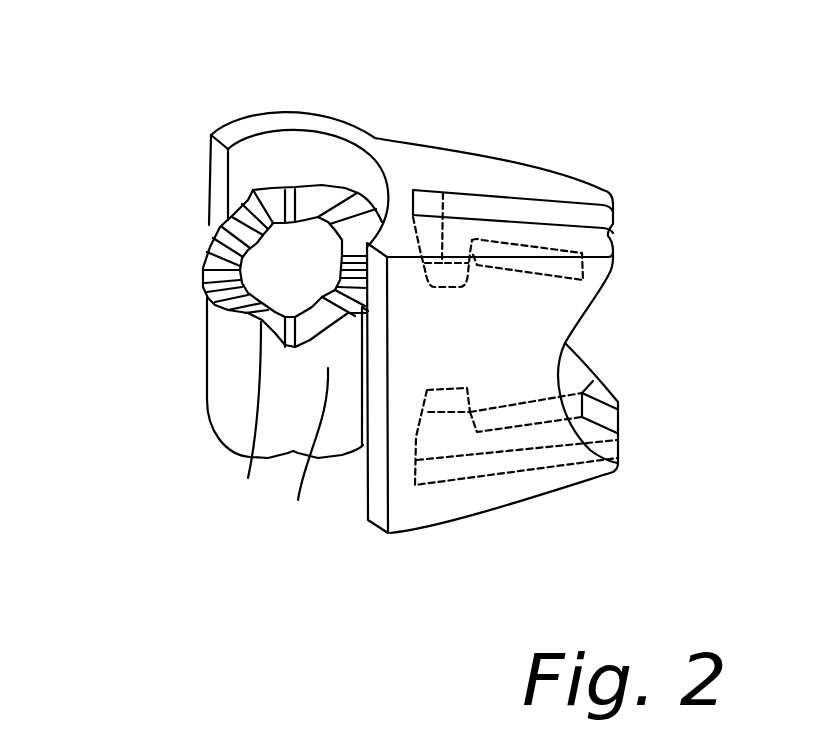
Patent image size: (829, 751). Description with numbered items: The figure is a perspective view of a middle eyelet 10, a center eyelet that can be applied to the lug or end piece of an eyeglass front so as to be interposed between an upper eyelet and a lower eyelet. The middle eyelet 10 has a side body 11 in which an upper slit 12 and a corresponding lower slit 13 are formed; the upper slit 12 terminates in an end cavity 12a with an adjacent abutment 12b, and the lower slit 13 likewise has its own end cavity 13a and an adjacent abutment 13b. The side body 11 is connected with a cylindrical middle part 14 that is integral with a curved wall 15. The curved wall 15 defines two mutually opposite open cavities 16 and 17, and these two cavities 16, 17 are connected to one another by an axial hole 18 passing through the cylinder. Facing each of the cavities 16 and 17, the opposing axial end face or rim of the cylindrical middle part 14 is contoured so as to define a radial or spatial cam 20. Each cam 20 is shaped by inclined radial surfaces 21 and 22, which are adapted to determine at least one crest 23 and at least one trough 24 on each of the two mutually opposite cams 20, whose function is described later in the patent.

The middle eyelet 10 is at (185, 335).
The side body 11 is at (508, 310).
The upper slit 12 is at (553, 217).
The end cavity 12a is at (443, 193).
The abutment 12b is at (489, 240).
The lower slit 13 is at (619, 434).
The end cavity 13a is at (443, 420).
The abutment 13b is at (487, 413).
The cylindrical middle part 14 is at (301, 454).
The curved wall 15 is at (333, 126).
The open cavity 16 is at (242, 187).
The open cavity 17 is at (362, 458).
The axial hole 18 is at (277, 267).
The radial or spatial cam 20 is at (227, 452).
The inclined radial surface 21 is at (265, 318).
The inclined radial surface 22 is at (260, 322).
The crest 23 is at (262, 310).
The trough 24 is at (244, 420).